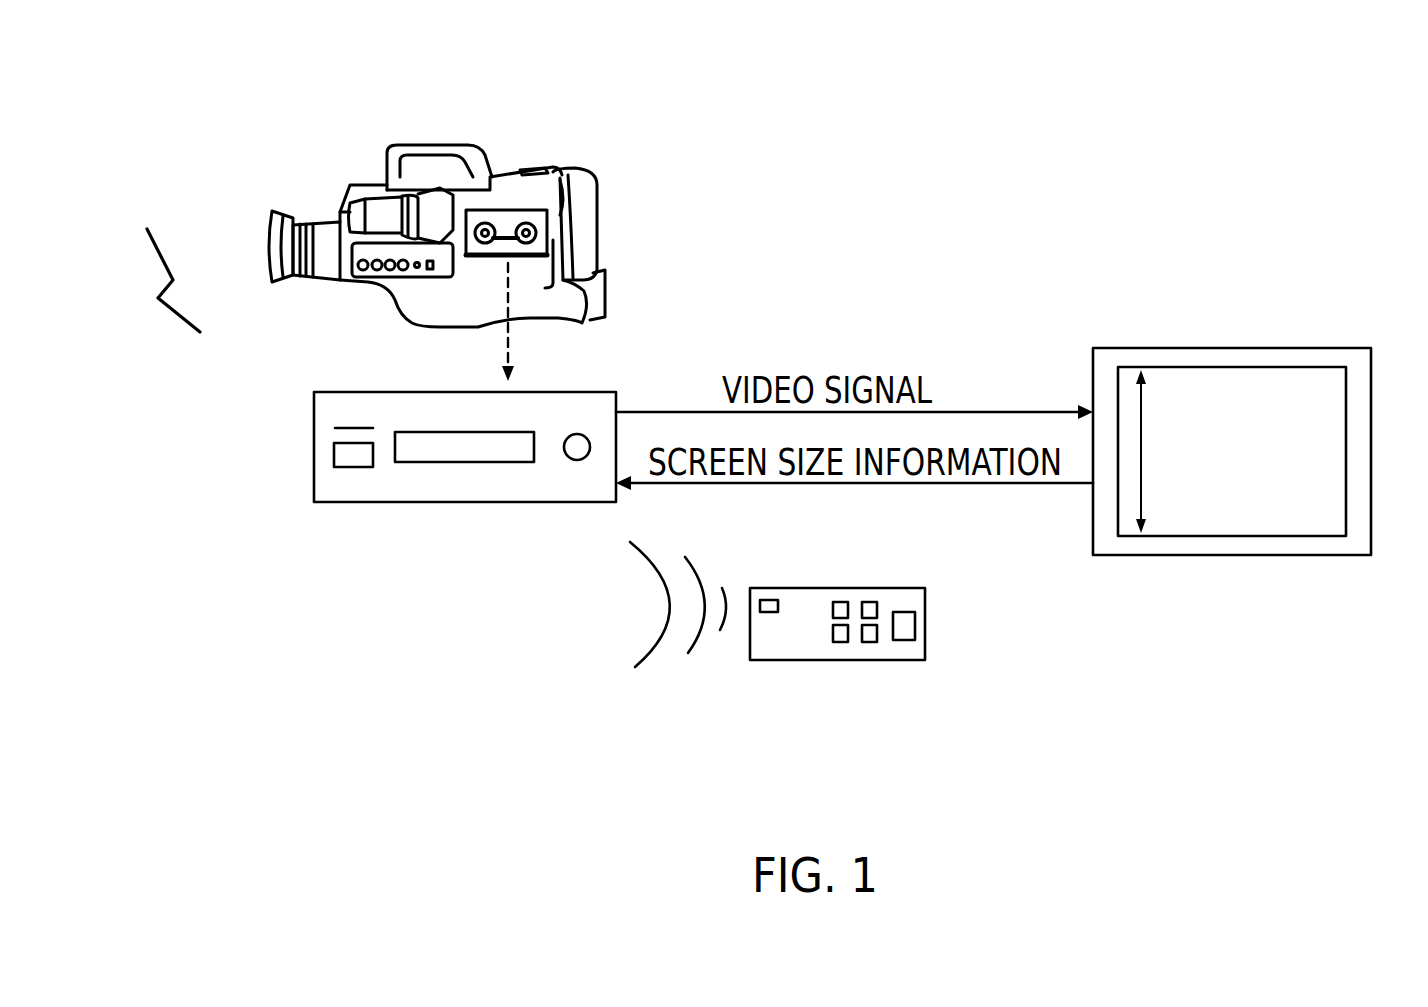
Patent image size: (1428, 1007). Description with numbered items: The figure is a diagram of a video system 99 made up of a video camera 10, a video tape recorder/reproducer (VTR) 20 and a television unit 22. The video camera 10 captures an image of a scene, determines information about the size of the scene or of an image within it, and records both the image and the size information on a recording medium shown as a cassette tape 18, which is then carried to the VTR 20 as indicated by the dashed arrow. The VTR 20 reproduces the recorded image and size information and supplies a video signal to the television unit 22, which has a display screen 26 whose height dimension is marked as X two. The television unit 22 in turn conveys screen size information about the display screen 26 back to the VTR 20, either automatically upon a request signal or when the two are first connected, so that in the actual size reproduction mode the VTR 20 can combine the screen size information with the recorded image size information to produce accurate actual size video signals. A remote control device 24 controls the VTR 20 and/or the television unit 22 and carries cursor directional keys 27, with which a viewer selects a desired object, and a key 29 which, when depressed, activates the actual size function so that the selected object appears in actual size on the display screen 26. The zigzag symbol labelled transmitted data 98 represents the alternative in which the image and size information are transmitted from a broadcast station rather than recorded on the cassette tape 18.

The video camera 10 is at (465, 145).
The cassette tape 18 is at (550, 223).
The video tape recorder/reproducer (VTR) 20 is at (447, 502).
The television unit 22 is at (1256, 414).
The remote control device 24 is at (993, 675).
The display screen 26 is at (1346, 456).
The cursor directional keys 27 is at (812, 592).
The key 29 is at (900, 640).
The transmitted data 98 is at (148, 241).
The video system 99 is at (770, 302).